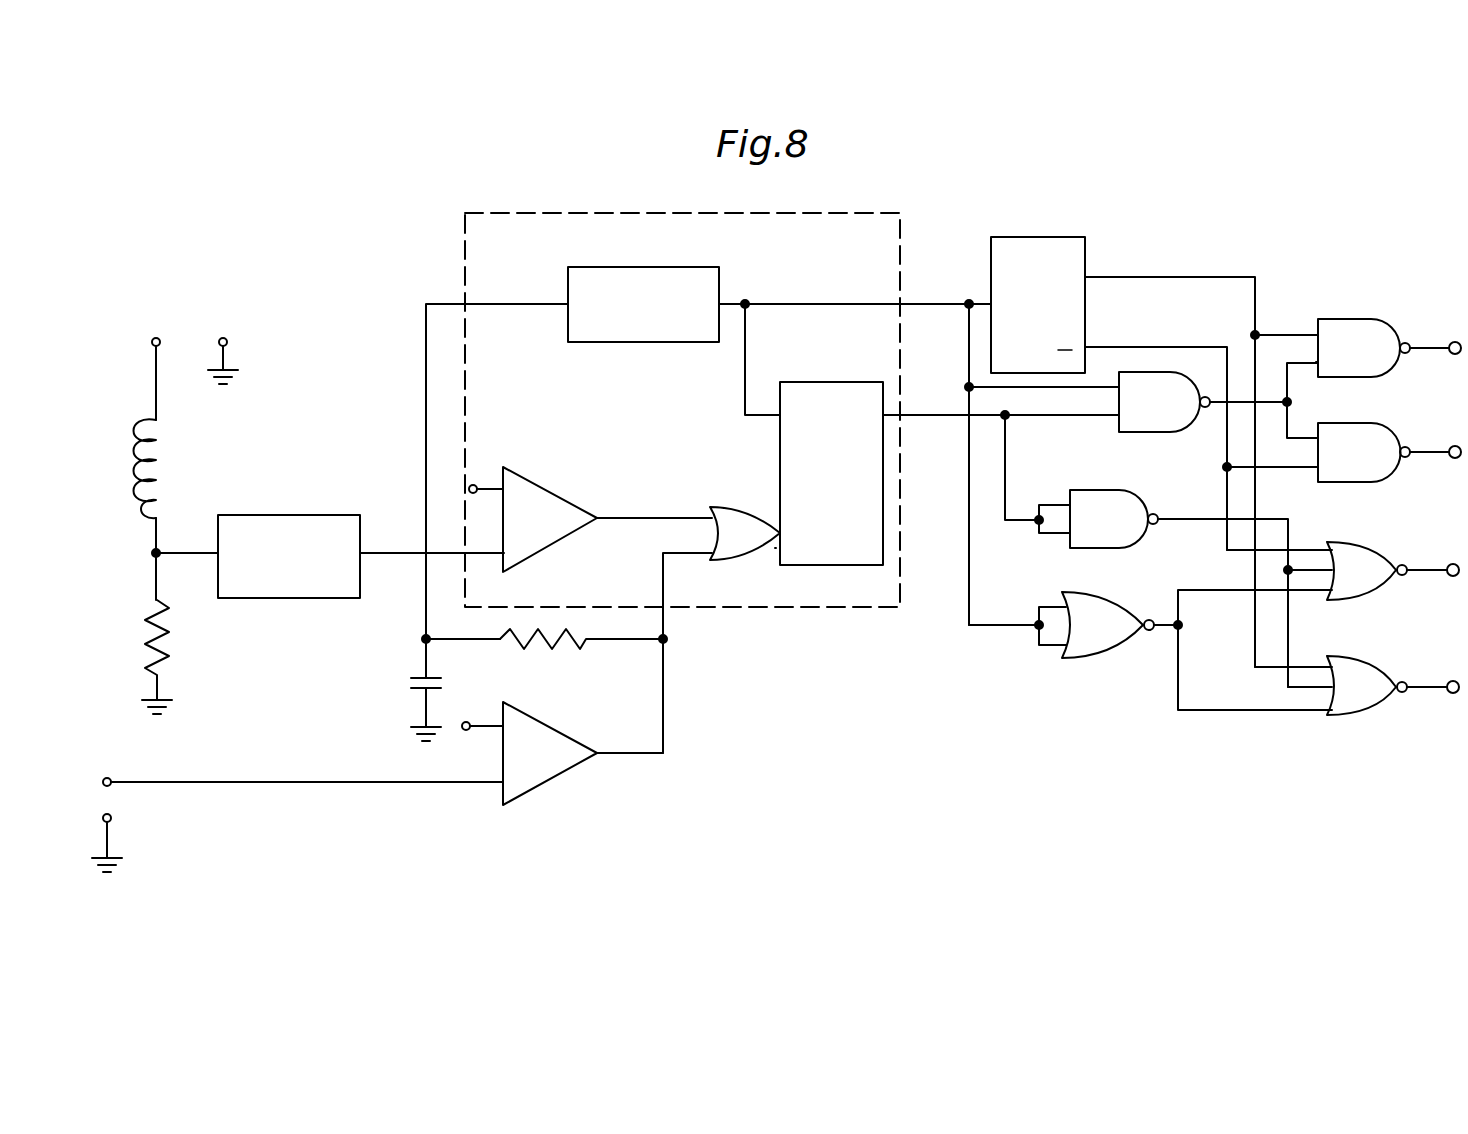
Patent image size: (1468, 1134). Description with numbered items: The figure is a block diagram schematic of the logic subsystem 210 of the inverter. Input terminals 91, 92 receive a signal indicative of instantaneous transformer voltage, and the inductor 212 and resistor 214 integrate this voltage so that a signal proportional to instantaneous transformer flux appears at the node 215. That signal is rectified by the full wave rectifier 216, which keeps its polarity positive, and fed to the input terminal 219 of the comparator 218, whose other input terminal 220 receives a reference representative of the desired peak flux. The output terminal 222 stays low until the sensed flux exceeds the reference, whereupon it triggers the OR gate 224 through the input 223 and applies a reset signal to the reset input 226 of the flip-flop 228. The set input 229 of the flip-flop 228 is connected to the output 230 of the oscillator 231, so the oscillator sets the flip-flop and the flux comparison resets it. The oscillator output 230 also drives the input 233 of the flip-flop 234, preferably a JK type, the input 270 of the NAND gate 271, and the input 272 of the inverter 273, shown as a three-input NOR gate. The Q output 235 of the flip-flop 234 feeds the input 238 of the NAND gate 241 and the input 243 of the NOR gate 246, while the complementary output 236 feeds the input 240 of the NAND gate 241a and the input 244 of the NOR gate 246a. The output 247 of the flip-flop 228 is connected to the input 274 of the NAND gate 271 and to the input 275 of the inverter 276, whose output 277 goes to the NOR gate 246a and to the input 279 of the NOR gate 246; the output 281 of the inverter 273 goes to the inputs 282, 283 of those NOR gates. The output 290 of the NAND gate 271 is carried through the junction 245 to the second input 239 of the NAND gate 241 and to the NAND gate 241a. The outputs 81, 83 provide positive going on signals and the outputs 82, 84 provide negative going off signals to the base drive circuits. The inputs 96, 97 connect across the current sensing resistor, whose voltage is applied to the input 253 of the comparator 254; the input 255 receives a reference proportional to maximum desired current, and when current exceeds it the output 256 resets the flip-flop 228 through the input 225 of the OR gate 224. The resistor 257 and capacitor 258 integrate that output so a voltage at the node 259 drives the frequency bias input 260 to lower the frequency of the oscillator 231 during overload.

The input terminal 91 is at (152, 342).
The input terminal 92 is at (222, 338).
The input 96 is at (107, 778).
The input 97 is at (111, 820).
The output 81 is at (1450, 577).
The output 82 is at (1451, 355).
The output 83 is at (1450, 694).
The output 84 is at (1452, 459).
The logic subsystem 210 is at (526, 194).
The inductor 212 is at (164, 468).
The resistor 214 is at (170, 640).
The node 215 is at (158, 551).
The full wave rectifier 216 is at (272, 515).
The comparator 218 is at (607, 510).
The input terminal 219 is at (503, 559).
The input terminal 220 is at (476, 486).
The output terminal 222 is at (597, 519).
The input 223 is at (704, 515).
The OR gate 224 is at (762, 514).
The input 225 is at (710, 548).
The reset input 226 is at (775, 548).
The flip-flop 228 is at (845, 382).
The set input 229 is at (776, 418).
The output 230 is at (722, 302).
The oscillator 231 is at (648, 267).
The input 233 is at (968, 303).
The flip-flop 234 is at (1020, 237).
The Q output 235 is at (1091, 275).
The Q output 236 is at (1091, 347).
The input 238 is at (1320, 334).
The NAND gate input line 239 is at (1318, 361).
The input 240 is at (1316, 468).
The NAND gate 241 is at (1375, 322).
The NAND gate 241a is at (1375, 426).
The input 243 is at (1327, 667).
The input 244 is at (1325, 545).
The junction node 245 is at (1315, 436).
The NOR gate 246 is at (1362, 715).
The NOR gate 246a is at (1365, 543).
The output 247 is at (883, 416).
The input 253 is at (500, 784).
The comparator 254 is at (555, 740).
The input 255 is at (468, 722).
The output 256 is at (597, 755).
The resistor 257 is at (566, 638).
The capacitor 258 is at (418, 678).
The node 259 is at (424, 636).
The frequency bias input 260 is at (568, 304).
The input 270 is at (1115, 388).
The NAND gate 271 is at (1142, 431).
The input 272 is at (1000, 623).
The inverter 273 is at (1128, 609).
The input 274 is at (1114, 416).
The input 275 is at (1038, 522).
The inverter 276 is at (1130, 490).
The output 277 is at (1160, 521).
The input 279 is at (1326, 686).
The output 281 is at (1150, 631).
The input 282 is at (1326, 595).
The input 283 is at (1322, 710).
The output 290 is at (1204, 408).